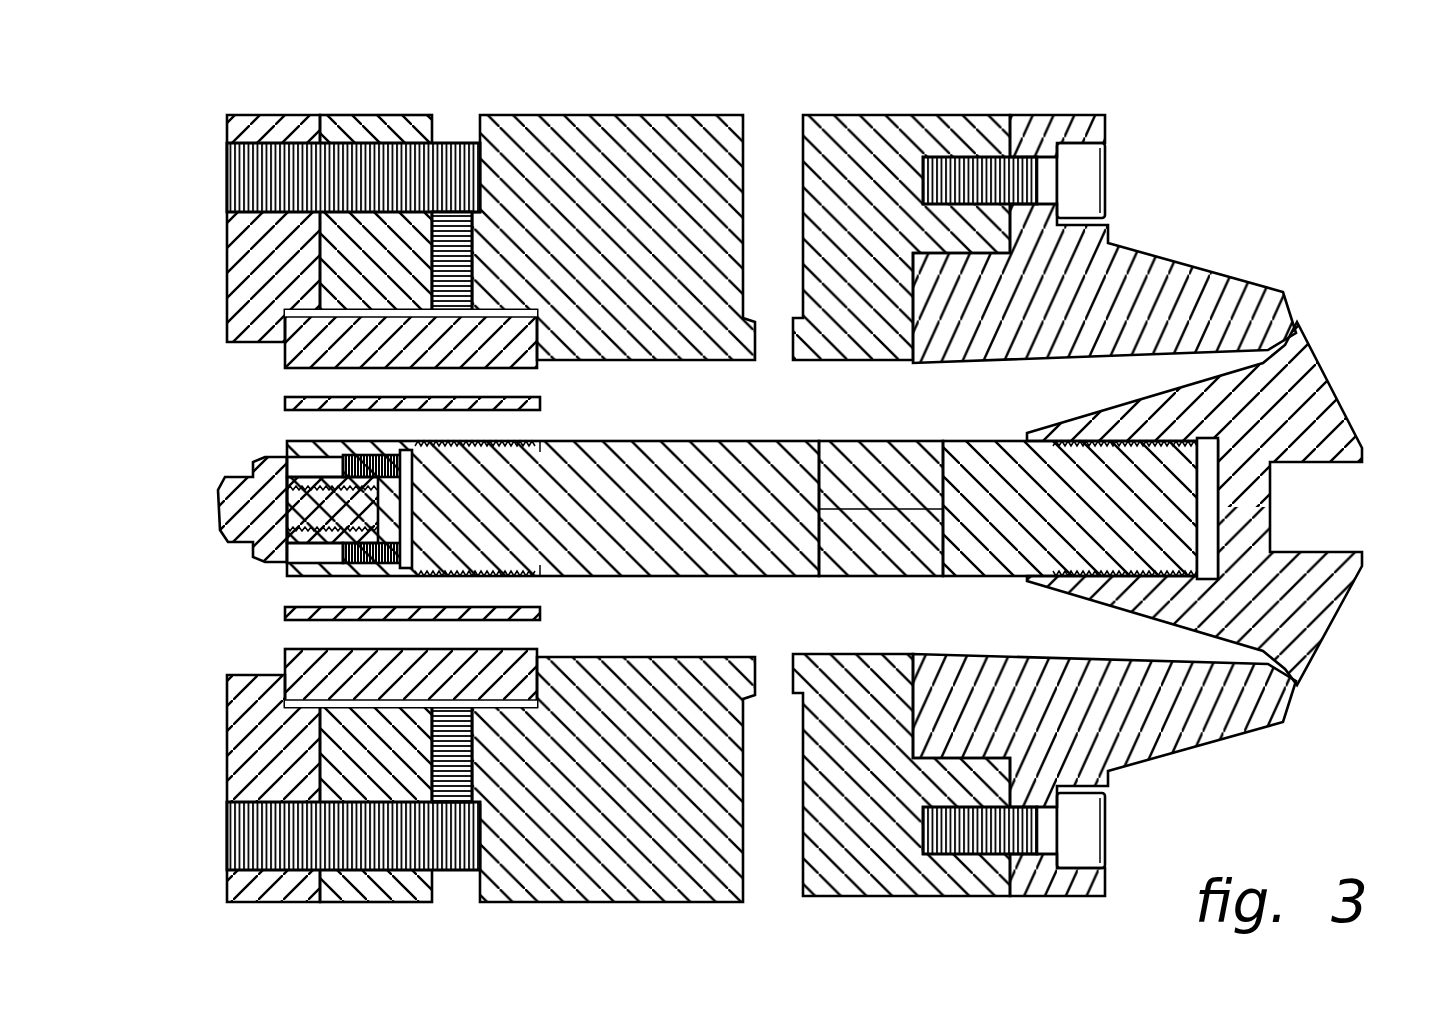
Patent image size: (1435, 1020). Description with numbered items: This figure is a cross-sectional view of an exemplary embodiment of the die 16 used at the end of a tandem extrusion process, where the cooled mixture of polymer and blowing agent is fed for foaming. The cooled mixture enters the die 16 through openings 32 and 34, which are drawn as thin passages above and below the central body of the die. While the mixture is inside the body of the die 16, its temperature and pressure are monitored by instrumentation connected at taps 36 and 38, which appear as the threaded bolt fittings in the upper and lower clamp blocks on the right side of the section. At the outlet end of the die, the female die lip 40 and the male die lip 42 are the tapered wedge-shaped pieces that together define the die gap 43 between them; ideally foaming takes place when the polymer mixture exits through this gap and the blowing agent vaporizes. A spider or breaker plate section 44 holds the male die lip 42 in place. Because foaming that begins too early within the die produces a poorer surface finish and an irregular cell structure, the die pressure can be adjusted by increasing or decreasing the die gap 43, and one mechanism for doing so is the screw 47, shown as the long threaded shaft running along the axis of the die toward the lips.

The die 16 is at (1101, 509).
The opening 32 is at (262, 402).
The opening 34 is at (262, 610).
The tap 36 is at (784, 110).
The tap 38 is at (782, 906).
The female die lip 40 is at (1157, 255).
The male die lip 42 is at (1333, 632).
The die gap 43 is at (1303, 328).
The spider or breaker plate section 44 is at (510, 397).
The screw 47 is at (985, 440).